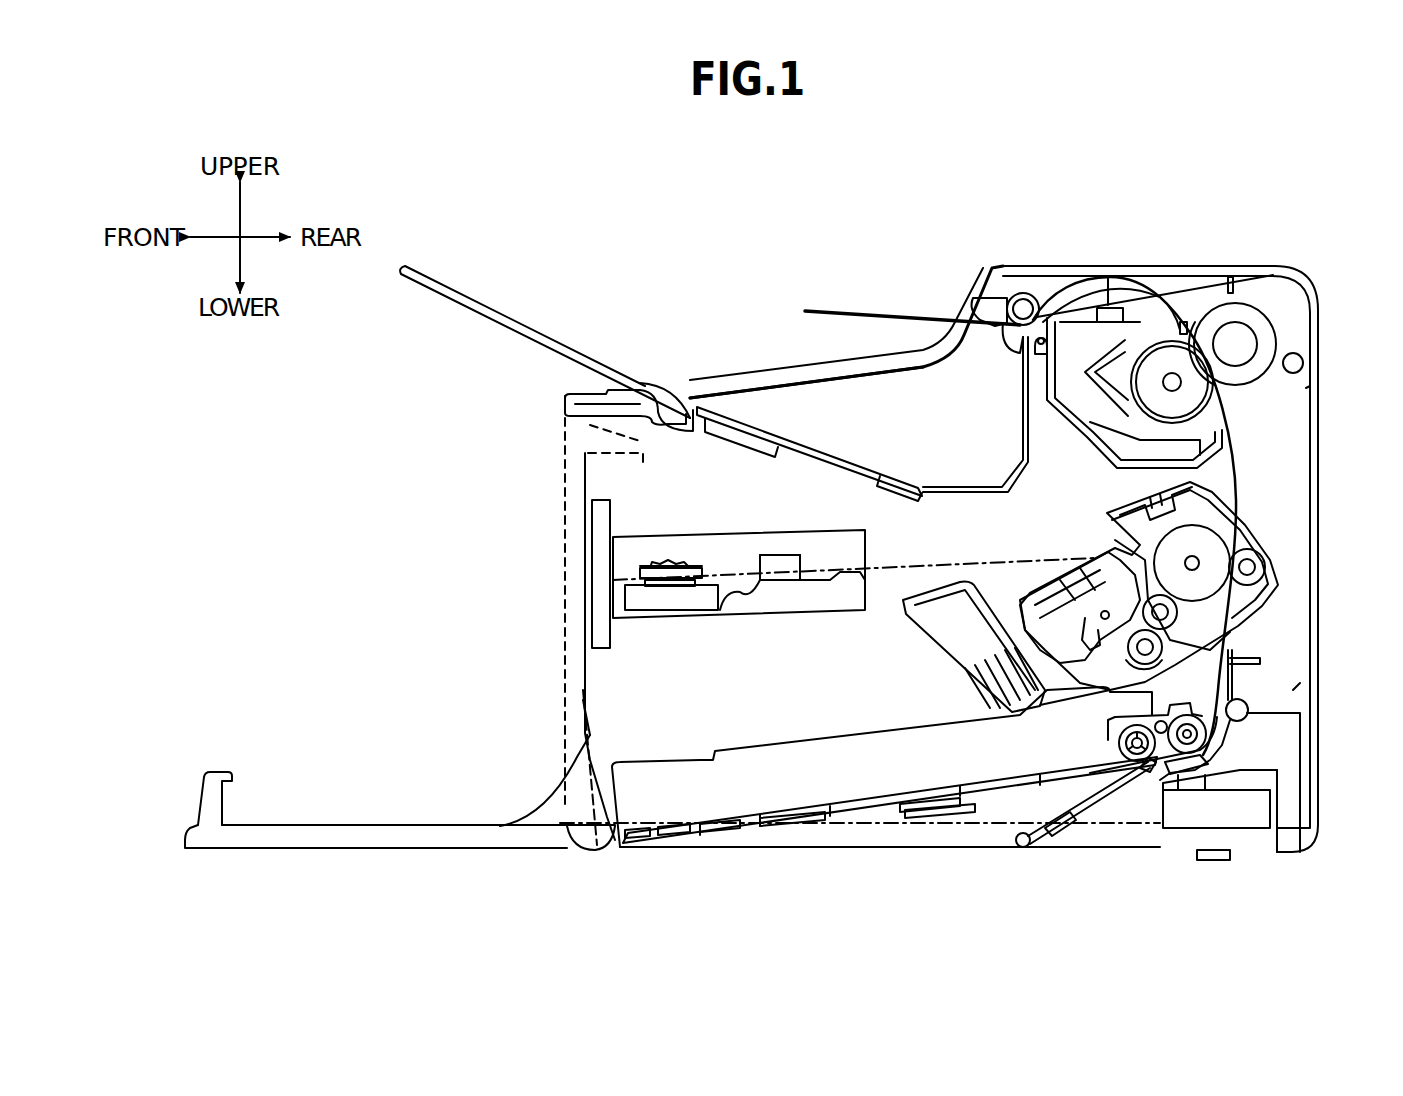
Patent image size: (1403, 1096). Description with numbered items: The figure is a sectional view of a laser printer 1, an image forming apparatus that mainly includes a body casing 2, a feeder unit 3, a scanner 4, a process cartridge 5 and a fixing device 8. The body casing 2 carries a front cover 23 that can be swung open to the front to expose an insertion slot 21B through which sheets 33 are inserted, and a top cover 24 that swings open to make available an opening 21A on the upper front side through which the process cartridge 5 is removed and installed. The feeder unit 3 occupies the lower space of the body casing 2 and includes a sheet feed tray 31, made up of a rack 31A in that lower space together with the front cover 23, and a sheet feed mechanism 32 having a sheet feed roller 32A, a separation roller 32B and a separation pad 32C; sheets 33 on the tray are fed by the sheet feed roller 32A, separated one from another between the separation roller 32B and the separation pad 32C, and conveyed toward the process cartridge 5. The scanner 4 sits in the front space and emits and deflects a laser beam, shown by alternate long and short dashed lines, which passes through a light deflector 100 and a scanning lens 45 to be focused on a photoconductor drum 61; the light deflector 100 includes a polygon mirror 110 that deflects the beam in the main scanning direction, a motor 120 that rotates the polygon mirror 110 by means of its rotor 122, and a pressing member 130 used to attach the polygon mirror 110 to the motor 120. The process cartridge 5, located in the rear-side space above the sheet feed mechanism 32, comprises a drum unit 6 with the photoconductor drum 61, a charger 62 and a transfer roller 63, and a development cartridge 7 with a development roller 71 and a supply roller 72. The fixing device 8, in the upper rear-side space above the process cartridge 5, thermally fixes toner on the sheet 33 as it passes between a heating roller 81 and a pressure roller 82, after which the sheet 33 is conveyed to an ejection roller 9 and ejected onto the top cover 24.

The laser printer 1 is at (652, 230).
The body casing 2 is at (1322, 782).
The feeder unit 3 is at (648, 714).
The scanner 4 is at (868, 546).
The process cartridge 5 is at (1090, 503).
The drum unit 6 is at (1222, 493).
The development cartridge 7 is at (1060, 578).
The fixing device 8 is at (1283, 298).
The ejection roller 9 is at (1030, 290).
The opening 21A is at (835, 455).
The insertion slot 21B is at (647, 793).
The front cover 23 is at (367, 825).
The top cover 24 is at (785, 435).
The sheet feed tray 31 is at (222, 758).
The rack 31A is at (908, 790).
The sheet feed mechanism 32 is at (1100, 730).
The sheet feed roller 32A is at (1146, 762).
The separation roller 32B is at (1207, 724).
The separation pad 32C is at (1200, 770).
The sheet 33 is at (850, 308).
The scanning lens 45 is at (787, 582).
The photoconductor drum 61 is at (1212, 540).
The charger 62 is at (1162, 497).
The transfer roller 63 is at (1265, 570).
The development roller 71 is at (1182, 613).
The supply roller 72 is at (1162, 655).
The heating roller 81 is at (1140, 382).
The pressure roller 82 is at (1252, 318).
The light deflector 100 is at (645, 560).
The polygon mirror 110 is at (632, 573).
The motor 120 is at (622, 593).
The rotor 122 is at (695, 588).
The pressing member 130 is at (685, 564).